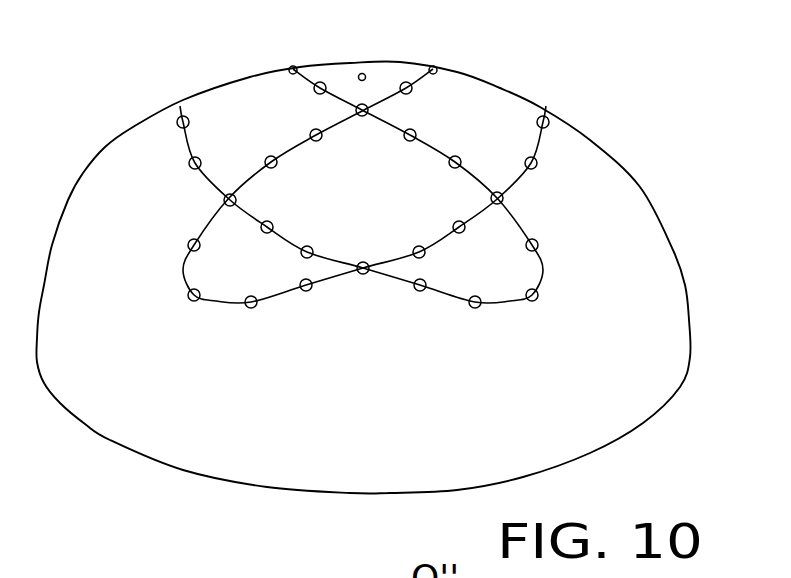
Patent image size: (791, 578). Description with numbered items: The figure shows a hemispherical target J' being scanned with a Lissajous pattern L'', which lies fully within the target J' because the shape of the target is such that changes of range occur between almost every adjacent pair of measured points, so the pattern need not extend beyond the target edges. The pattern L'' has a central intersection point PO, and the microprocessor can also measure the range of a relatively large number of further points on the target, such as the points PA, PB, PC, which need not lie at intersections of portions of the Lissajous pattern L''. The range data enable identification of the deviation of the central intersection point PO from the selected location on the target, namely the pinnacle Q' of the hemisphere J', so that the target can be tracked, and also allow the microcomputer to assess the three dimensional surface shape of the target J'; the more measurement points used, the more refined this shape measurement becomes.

The hemispherical target J' is at (363, 277).
The pinnacle of the hemisphere Q' is at (405, 42).
The central intersection point PO is at (354, 110).
The measured point PA is at (405, 139).
The measured point PB is at (450, 163).
The measured point PC is at (502, 199).
The Lissajous pattern L'' is at (363, 223).